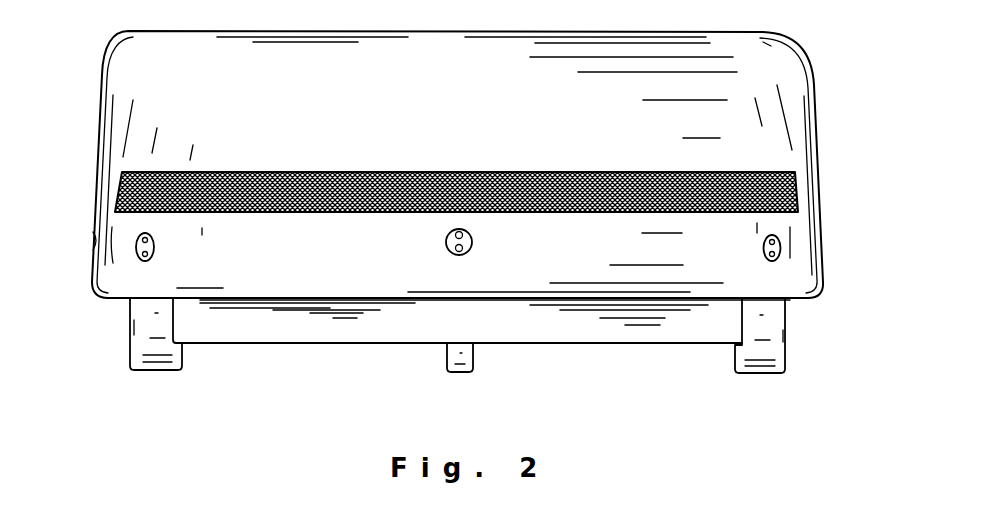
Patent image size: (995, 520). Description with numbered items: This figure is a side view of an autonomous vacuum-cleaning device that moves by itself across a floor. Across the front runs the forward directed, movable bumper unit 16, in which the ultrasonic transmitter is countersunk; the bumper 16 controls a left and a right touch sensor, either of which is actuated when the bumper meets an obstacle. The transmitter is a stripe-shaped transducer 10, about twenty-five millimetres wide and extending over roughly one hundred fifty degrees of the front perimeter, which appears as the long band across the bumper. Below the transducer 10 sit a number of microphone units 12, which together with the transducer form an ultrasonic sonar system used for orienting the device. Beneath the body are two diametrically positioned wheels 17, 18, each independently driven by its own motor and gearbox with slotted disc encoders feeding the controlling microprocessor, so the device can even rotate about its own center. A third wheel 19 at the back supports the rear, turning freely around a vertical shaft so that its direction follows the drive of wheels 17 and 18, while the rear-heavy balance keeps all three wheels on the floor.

The bumper unit 16 is at (708, 89).
The stripe-shaped transducer 10 is at (792, 191).
The microphone units 12 is at (138, 256).
The wheel 17 is at (132, 347).
The wheel 18 is at (787, 350).
The third wheel 19 is at (445, 357).